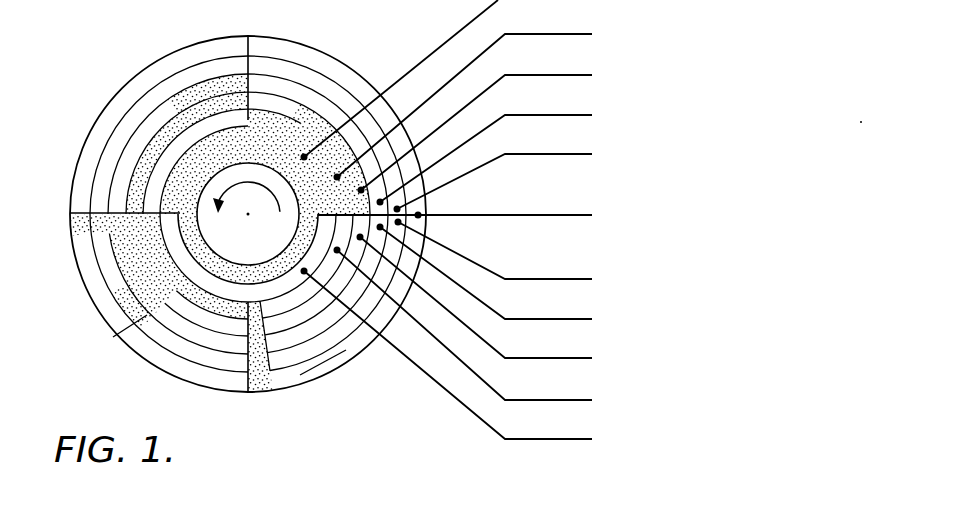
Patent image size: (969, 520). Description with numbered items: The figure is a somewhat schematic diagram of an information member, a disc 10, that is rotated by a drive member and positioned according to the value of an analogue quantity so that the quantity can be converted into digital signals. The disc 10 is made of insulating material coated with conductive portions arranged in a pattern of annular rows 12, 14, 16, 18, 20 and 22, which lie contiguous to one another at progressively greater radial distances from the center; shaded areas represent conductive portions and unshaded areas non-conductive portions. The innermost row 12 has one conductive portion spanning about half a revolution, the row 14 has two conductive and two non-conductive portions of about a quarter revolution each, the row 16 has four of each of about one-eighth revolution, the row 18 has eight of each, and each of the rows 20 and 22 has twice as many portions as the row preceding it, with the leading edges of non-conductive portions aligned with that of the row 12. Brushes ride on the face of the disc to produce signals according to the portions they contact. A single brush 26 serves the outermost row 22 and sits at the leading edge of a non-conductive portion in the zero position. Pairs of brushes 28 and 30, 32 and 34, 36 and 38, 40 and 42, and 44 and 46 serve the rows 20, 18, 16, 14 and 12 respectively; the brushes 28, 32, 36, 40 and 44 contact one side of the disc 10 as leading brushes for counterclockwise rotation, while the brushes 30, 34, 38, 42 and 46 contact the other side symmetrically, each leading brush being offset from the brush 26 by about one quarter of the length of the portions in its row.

The disc 10 is at (271, 392).
The row 12 is at (348, 352).
The row 14 is at (228, 120).
The row 16 is at (130, 203).
The row 18 is at (113, 337).
The row 20 is at (228, 367).
The row 22 is at (305, 378).
The brush 26 is at (424, 211).
The brush 28 is at (424, 225).
The brush 30 is at (415, 185).
The brush 32 is at (414, 250).
The brush 34 is at (407, 162).
The brush 36 is at (402, 274).
The brush 38 is at (399, 136).
The brush 40 is at (392, 296).
The brush 42 is at (372, 110).
The brush 44 is at (378, 318).
The brush 46 is at (323, 112).